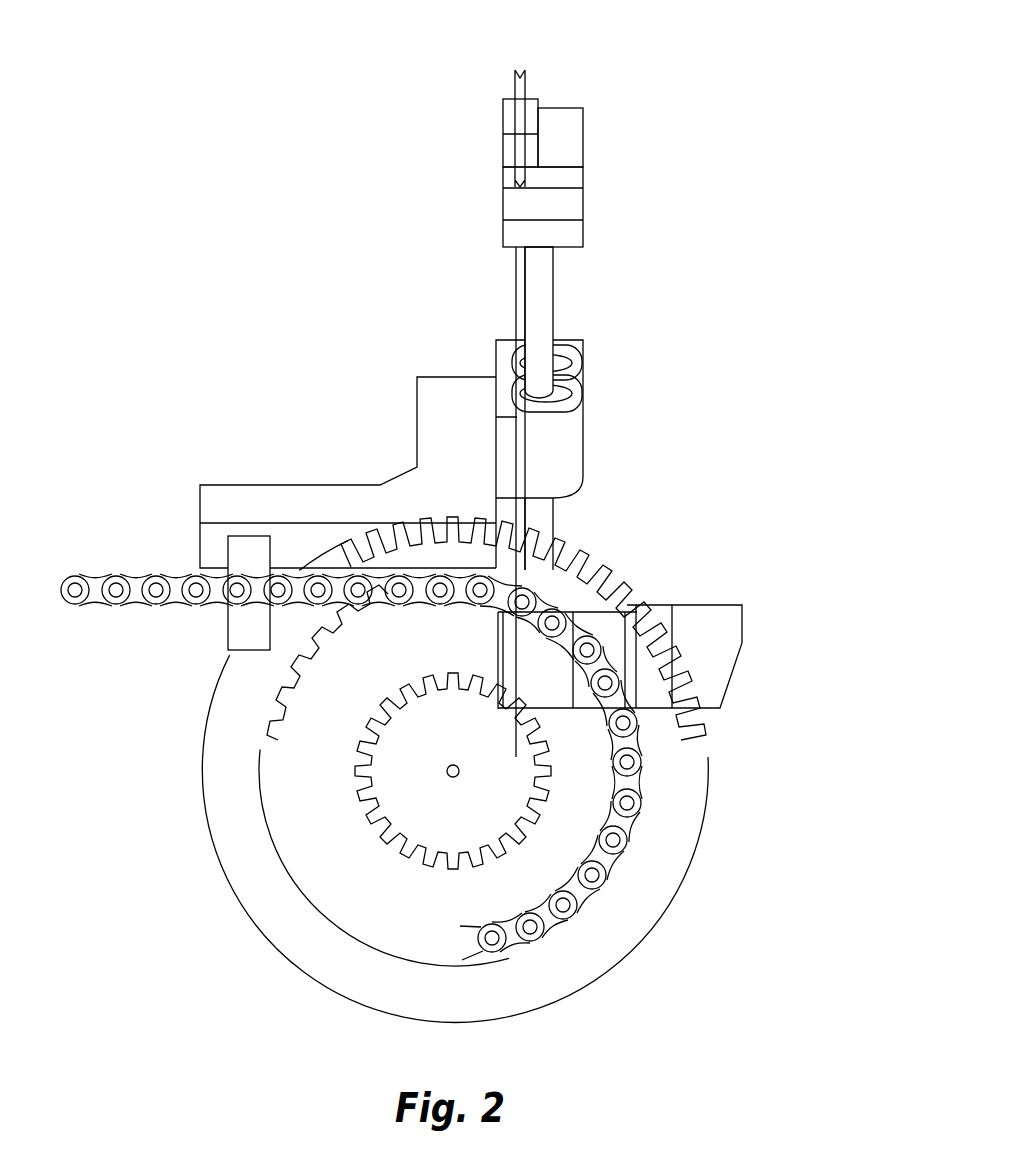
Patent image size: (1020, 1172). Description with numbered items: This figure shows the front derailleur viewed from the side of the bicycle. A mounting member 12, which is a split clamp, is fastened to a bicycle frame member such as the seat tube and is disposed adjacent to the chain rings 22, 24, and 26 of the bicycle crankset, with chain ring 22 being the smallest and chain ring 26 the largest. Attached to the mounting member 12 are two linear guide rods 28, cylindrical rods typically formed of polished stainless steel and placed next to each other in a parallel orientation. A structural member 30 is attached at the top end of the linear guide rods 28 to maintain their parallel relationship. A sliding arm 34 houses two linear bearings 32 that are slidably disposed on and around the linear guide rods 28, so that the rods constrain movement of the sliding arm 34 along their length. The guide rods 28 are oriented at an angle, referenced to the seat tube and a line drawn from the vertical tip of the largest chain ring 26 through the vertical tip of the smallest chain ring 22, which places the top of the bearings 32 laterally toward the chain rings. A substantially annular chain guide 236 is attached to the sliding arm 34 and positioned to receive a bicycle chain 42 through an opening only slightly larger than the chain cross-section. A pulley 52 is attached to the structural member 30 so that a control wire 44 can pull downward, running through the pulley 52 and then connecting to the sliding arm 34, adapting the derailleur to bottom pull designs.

The mounting member 12 is at (728, 622).
The chain ring 22 is at (433, 815).
The chain ring 24 is at (327, 712).
The chain ring 26 is at (568, 583).
The linear guide rods 28 is at (543, 287).
The structural member 30 is at (584, 143).
The linear bearings 32 is at (560, 362).
The sliding arm 34 is at (568, 358).
The bicycle chain 42 is at (90, 587).
The control wire 44 is at (517, 268).
The pulley 52 is at (515, 87).
The annular chain guide 236 is at (245, 619).